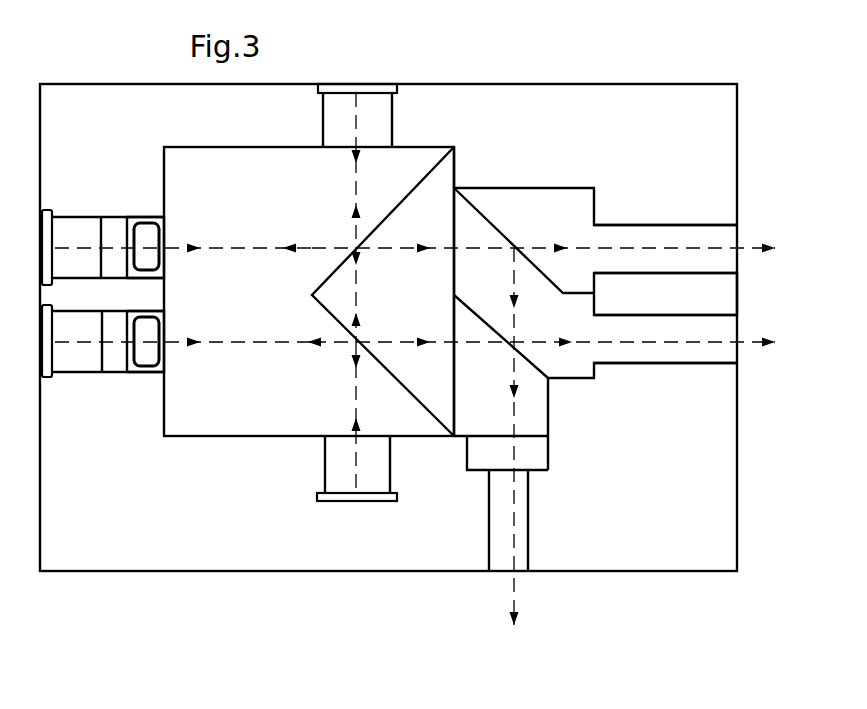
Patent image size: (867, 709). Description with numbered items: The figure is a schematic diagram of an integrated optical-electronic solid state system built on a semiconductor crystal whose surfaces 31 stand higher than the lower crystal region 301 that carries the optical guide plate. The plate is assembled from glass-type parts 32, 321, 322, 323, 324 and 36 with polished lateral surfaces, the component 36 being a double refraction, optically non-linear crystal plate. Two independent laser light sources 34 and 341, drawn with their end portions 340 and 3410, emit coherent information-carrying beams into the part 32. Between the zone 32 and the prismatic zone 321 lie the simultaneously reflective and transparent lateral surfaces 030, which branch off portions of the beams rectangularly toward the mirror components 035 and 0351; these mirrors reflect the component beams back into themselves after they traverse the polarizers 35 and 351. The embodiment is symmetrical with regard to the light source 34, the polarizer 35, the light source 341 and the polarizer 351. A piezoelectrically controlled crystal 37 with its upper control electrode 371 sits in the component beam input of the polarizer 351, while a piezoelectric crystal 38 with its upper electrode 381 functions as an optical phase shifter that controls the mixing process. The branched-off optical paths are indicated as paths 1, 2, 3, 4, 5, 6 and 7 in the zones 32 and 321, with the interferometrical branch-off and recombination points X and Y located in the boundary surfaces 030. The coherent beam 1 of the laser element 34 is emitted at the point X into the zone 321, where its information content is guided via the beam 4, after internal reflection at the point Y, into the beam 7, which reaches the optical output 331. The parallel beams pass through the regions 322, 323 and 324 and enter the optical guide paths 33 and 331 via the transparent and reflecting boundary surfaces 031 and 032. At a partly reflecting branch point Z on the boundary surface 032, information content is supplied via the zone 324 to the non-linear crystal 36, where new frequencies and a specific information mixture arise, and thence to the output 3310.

The crystal surfaces 31 is at (388, 327).
The optical guide plate part 32 is at (309, 291).
The light source 34 is at (357, 120).
The upper tube flange 340 is at (365, 88).
The light source 341 is at (385, 465).
The lower tube flange 3410 is at (370, 497).
The polarizer 35 is at (82, 232).
The mirror component 035 is at (48, 210).
The semiconductor crystal region 301 is at (120, 232).
The upper electrode 381 is at (148, 238).
The piezoelectric crystal 38 is at (160, 226).
The piezoelectrically controlled crystal 37 is at (160, 360).
The upper control electrode 371 is at (140, 362).
The polarizer 351 is at (88, 362).
The mirror component 0351 is at (47, 375).
The lateral surfaces 030 is at (392, 212).
The boundary surface 031 is at (484, 215).
The boundary surface 032 is at (480, 320).
The prismatic part 321 is at (425, 291).
The optical guide plate region 322 is at (595, 208).
The optical guide plate region 323 is at (642, 302).
The optical guide plate region 324 is at (501, 424).
The optical guide path 33 is at (657, 232).
The optical guide path 331 is at (660, 357).
The optical conductance path 3310 is at (530, 520).
The optically non-linear crystal plate 36 is at (535, 452).
The coherent beam 1 is at (354, 208).
The optical path 2 is at (228, 250).
The optical path 3 is at (390, 248).
The beam 4 is at (358, 294).
The optical path 5 is at (354, 396).
The optical path 6 is at (258, 344).
The beam 7 is at (388, 350).
The branch-off and recombination point X is at (354, 248).
The branch-off and recombination point Y is at (354, 345).
The optical branch point Z is at (514, 341).